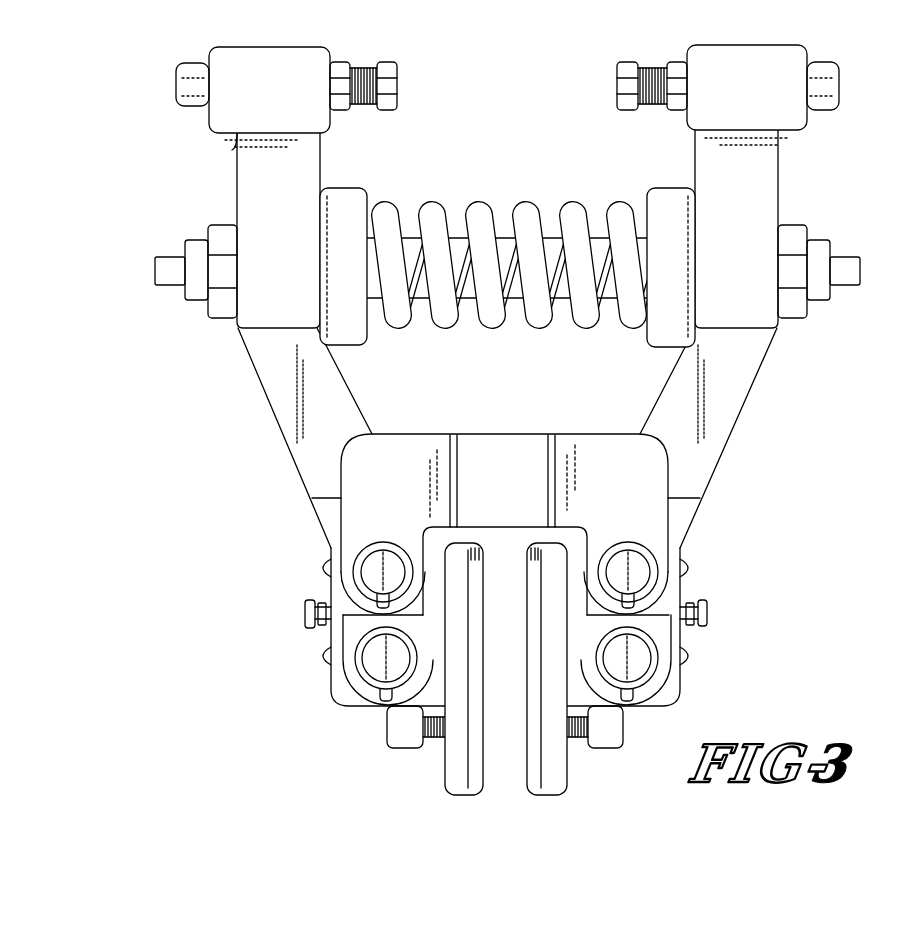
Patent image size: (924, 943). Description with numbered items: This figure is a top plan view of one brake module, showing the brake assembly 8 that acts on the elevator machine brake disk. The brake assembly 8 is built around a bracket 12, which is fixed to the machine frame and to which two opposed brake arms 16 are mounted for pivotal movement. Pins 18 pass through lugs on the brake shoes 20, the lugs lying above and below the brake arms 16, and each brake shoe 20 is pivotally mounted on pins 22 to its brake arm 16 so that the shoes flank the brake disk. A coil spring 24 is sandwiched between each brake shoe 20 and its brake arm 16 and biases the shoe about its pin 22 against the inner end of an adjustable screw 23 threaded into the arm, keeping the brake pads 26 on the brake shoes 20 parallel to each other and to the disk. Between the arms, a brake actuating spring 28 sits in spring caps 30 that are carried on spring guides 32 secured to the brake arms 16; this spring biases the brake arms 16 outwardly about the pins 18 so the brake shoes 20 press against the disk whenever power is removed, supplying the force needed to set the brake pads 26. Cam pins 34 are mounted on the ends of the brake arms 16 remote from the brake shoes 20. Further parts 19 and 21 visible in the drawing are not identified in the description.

The brake assembly 8 is at (766, 376).
The bracket 12 is at (525, 442).
The brake arms 16 is at (253, 172).
The pins 18 is at (385, 556).
The adjusting bolt 19 is at (364, 100).
The brake shoe 20 is at (447, 786).
The locking nut 21 is at (330, 90).
The pins 22 is at (375, 668).
The adjustable screw 23 is at (303, 616).
The coil spring 24 is at (420, 740).
The brake pads 26 is at (492, 750).
The brake actuating spring 28 is at (520, 200).
The spring caps 30 is at (350, 195).
The spring guides 32 is at (452, 215).
The cam pins 34 is at (190, 104).